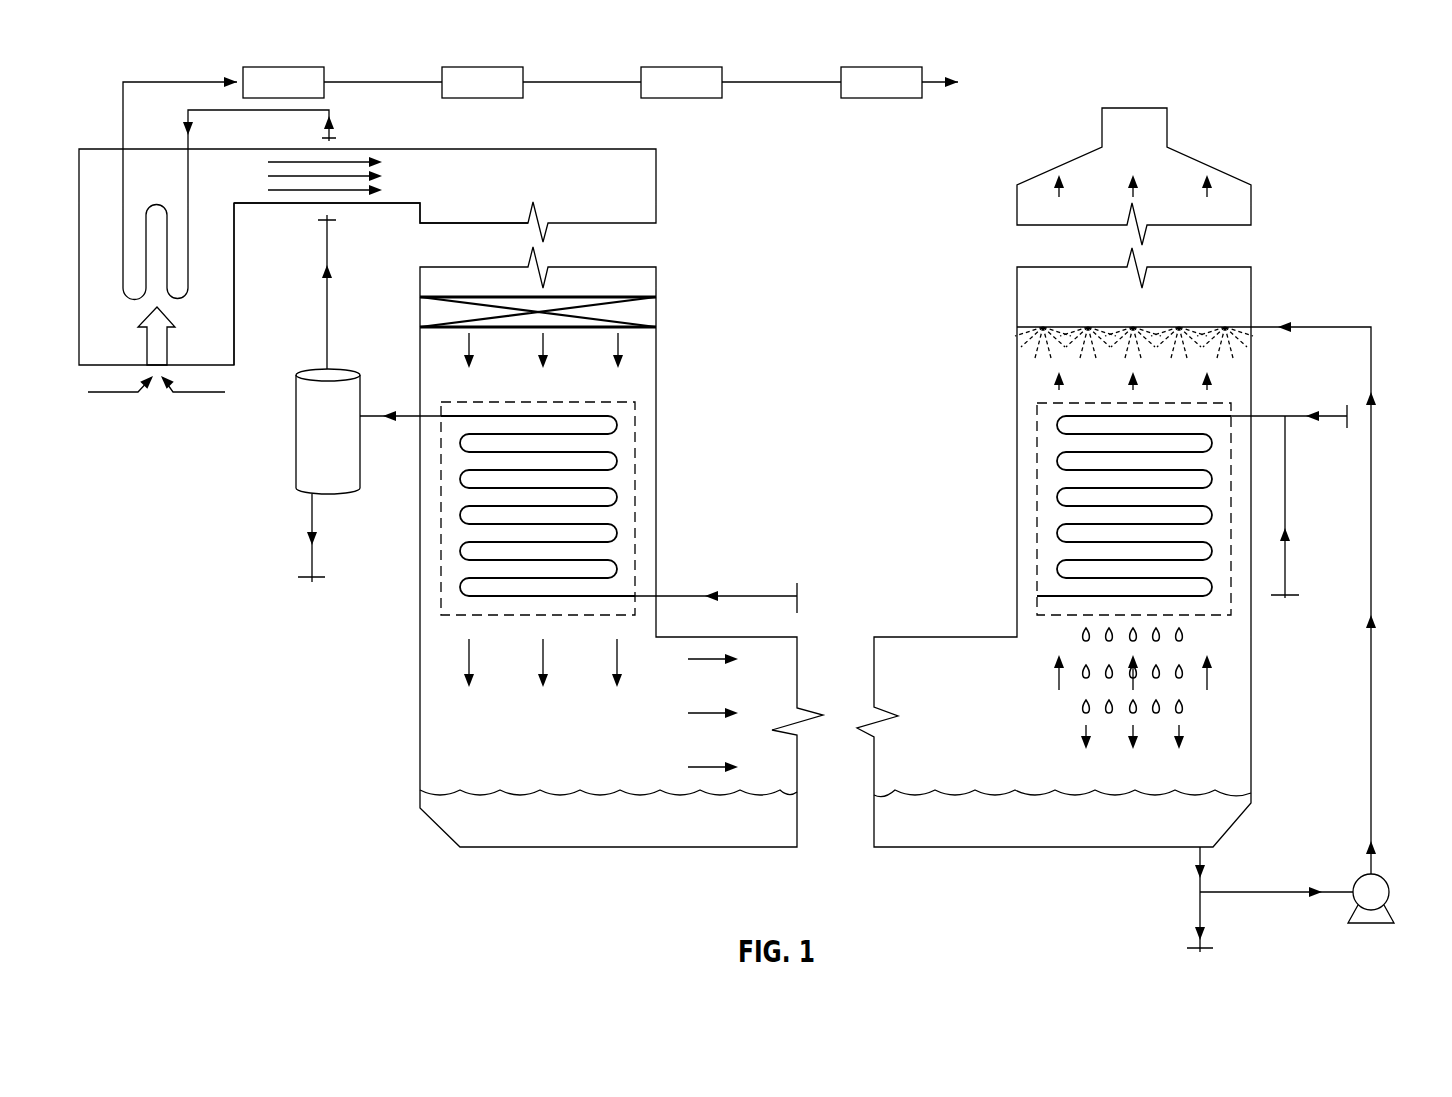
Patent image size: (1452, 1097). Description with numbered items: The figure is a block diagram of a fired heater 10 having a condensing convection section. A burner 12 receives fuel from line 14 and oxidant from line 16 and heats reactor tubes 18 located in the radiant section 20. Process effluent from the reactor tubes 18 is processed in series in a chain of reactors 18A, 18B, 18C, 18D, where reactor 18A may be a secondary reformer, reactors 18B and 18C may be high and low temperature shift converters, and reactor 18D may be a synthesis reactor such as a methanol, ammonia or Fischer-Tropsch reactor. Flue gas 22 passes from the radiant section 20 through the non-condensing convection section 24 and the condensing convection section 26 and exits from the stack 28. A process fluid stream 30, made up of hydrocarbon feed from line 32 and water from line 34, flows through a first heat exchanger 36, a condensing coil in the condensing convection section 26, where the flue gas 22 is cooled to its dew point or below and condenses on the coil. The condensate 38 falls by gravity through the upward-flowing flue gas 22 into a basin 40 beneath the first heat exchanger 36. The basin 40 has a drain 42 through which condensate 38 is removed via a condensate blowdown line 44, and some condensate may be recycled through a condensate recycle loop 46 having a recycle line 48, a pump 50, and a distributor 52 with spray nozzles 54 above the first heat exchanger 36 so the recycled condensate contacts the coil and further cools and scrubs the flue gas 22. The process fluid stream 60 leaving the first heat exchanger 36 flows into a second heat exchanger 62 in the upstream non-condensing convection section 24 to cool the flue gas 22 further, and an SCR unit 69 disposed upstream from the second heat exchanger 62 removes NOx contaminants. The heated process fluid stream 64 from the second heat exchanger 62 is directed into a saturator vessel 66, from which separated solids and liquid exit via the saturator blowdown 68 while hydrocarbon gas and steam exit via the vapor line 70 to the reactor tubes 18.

The fired heater 10 is at (163, 903).
The burner 12 is at (167, 352).
The fuel line 14 is at (113, 392).
The oxidant line 16 is at (185, 392).
The reactor tubes 18 is at (123, 208).
The secondary reformer 18A is at (324, 90).
The high temperature shift converter 18B is at (523, 90).
The low temperature shift converter 18C is at (722, 90).
The synthesis reactor 18D is at (922, 93).
The radiant section 20 is at (233, 353).
The flue gas 22 is at (322, 160).
The non-condensing convection section 24 is at (727, 522).
The condensing convection section 26 is at (960, 462).
The stack 28 is at (1167, 130).
The process fluid stream 30 is at (1262, 414).
The hydrocarbon feed line 32 is at (1286, 477).
The water line 34 is at (1341, 410).
The first heat exchanger 36 is at (1037, 462).
The condensate 38 is at (1186, 706).
The basin 40 is at (923, 813).
The drain 42 is at (1197, 852).
The condensate blowdown line 44 is at (1198, 917).
The condensate recycle loop 46 is at (1385, 748).
The recycle line 48 is at (1278, 896).
The pump 50 is at (1385, 877).
The distributor 52 is at (1020, 330).
The spray nozzles 54 is at (1205, 340).
The process fluid stream 60 is at (748, 596).
The second heat exchanger 62 is at (635, 522).
The exiting process fluid stream 64 is at (407, 413).
The saturator vessel 66 is at (315, 438).
The saturator blowdown 68 is at (312, 522).
The SCR unit 69 is at (650, 310).
The vapor line 70 is at (327, 320).